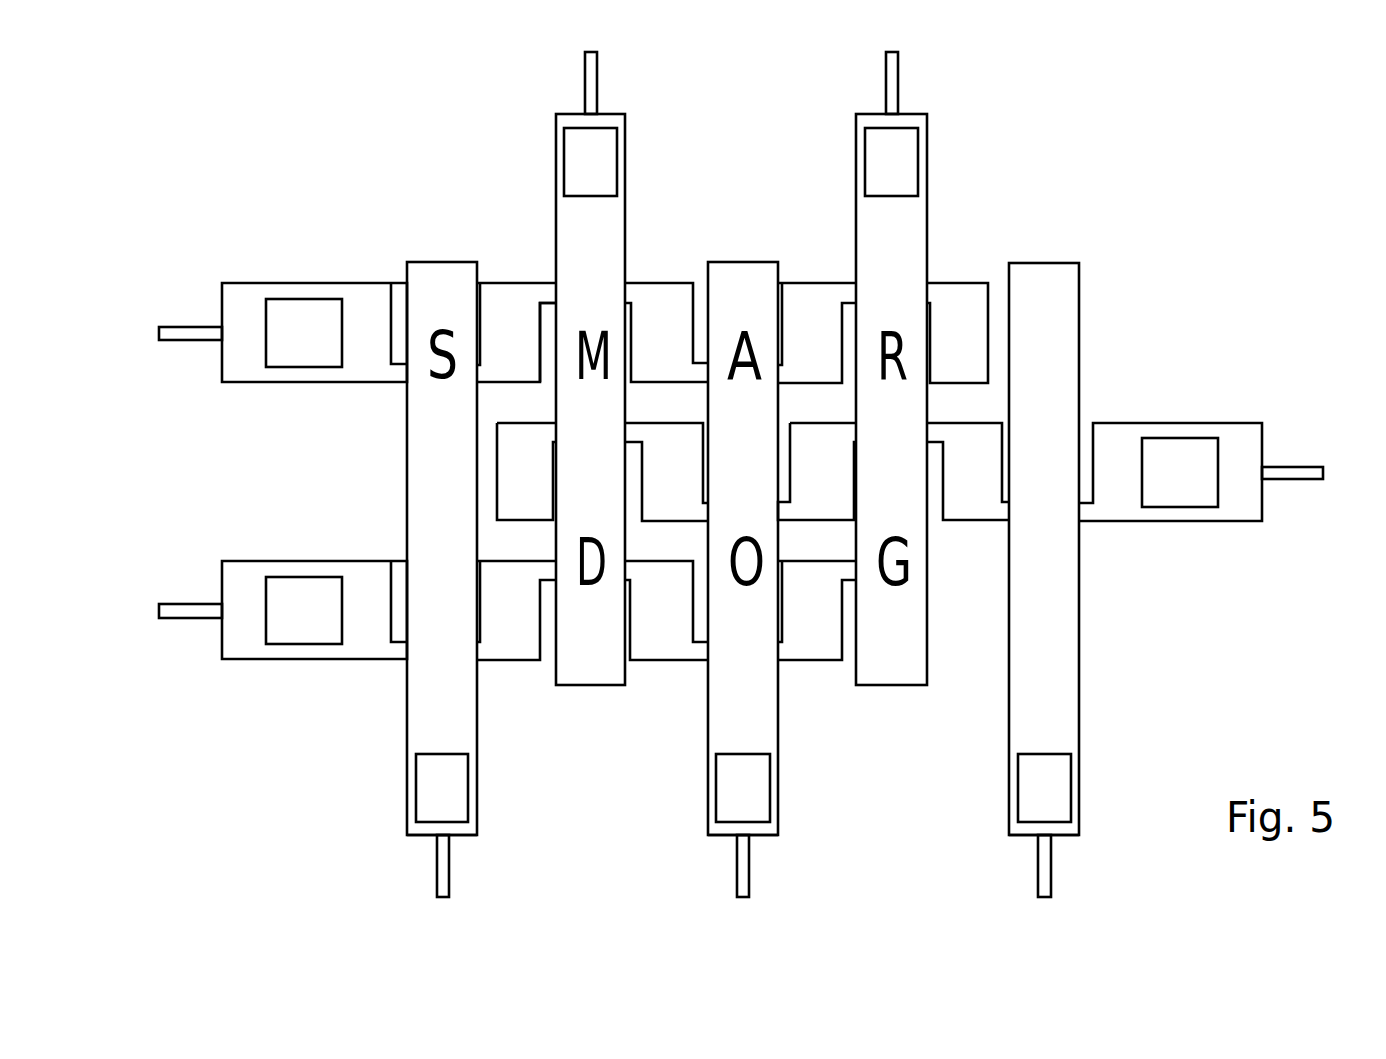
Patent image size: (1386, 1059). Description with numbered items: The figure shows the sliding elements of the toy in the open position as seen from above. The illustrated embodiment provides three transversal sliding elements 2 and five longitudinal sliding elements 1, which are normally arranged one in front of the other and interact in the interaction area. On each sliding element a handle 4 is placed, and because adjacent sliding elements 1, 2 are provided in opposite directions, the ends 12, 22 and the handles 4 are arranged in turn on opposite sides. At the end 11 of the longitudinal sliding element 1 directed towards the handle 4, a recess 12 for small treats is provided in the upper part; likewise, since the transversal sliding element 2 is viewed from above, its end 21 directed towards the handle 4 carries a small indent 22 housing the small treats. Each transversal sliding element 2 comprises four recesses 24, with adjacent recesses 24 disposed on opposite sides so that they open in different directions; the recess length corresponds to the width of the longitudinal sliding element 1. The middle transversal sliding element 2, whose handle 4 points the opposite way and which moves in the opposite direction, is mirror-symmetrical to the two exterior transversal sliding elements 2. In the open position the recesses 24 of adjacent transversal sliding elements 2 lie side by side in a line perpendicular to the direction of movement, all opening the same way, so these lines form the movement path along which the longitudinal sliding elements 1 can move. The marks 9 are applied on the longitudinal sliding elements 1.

The longitudinal sliding element 1 is at (539, 139).
The transversal sliding element 2 is at (707, 462).
The handle 4 is at (590, 82).
The mark 9 is at (1060, 333).
The end directed towards the handle 11 is at (455, 827).
The recess for small treats 12 is at (439, 789).
The end directed towards the handle 21 is at (296, 292).
The small indent 22 is at (287, 327).
The recess 24 is at (402, 316).